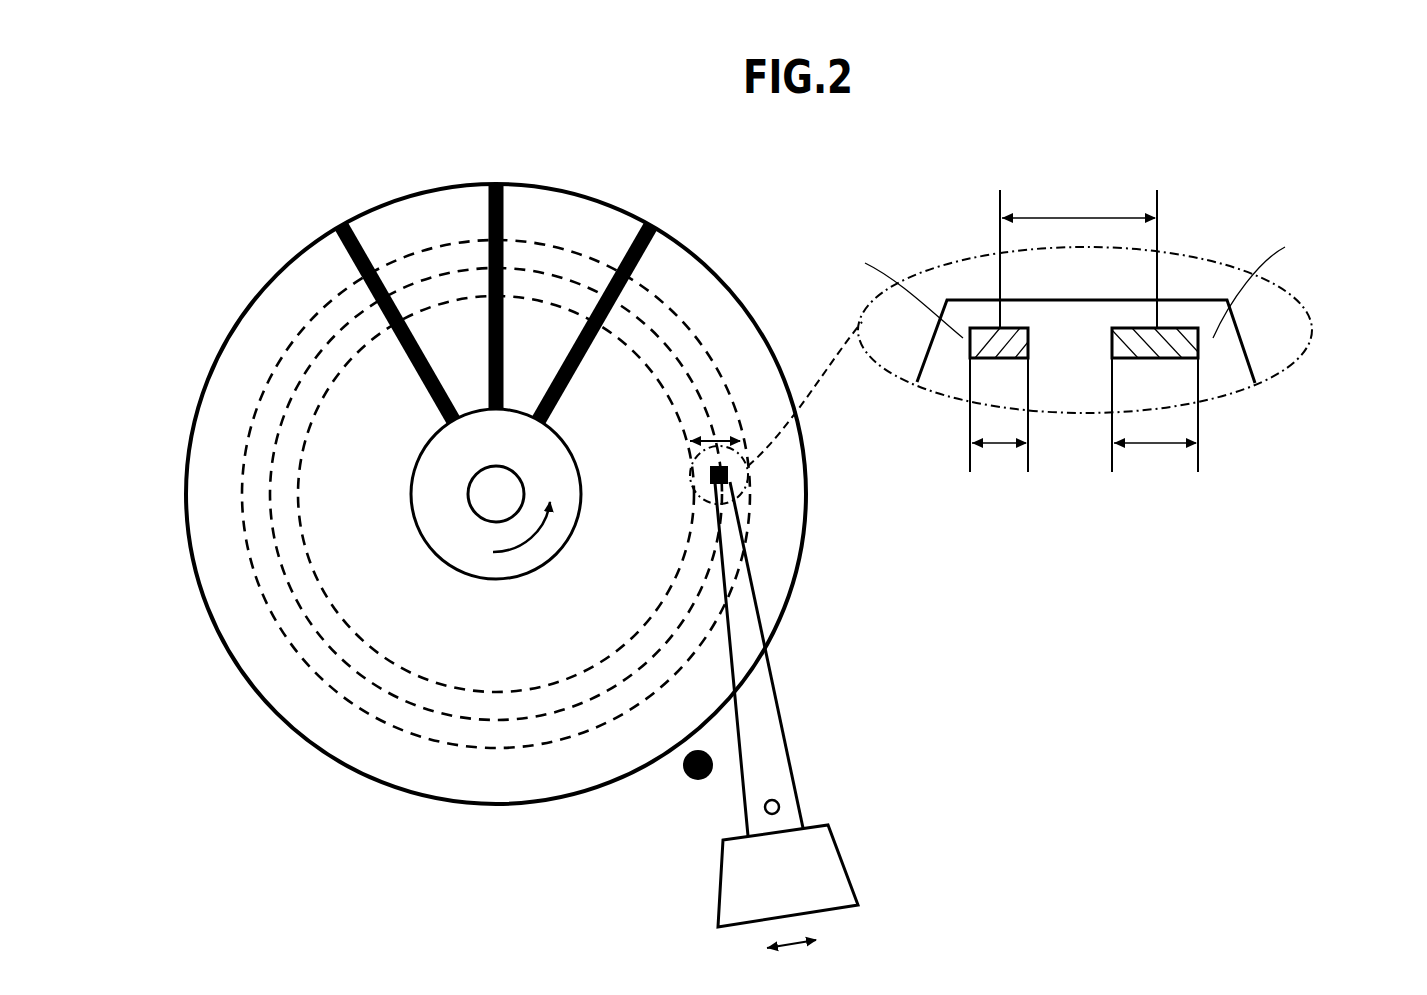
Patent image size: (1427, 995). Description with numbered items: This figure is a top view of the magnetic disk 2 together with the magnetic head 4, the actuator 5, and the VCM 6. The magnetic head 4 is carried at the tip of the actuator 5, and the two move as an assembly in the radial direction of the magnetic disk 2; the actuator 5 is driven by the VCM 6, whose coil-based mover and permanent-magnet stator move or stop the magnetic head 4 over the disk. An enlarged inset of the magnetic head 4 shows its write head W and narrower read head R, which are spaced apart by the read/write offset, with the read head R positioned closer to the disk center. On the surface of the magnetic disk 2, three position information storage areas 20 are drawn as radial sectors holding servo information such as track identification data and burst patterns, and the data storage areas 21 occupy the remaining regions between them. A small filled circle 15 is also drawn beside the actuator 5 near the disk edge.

The magnetic disk 2 is at (490, 805).
The magnetic head 4 is at (728, 482).
The actuator 5 is at (743, 612).
The VCM 6 is at (738, 893).
The pivot 15 is at (682, 773).
The position information storage area 20 is at (336, 226).
The data storage area 21 is at (418, 228).